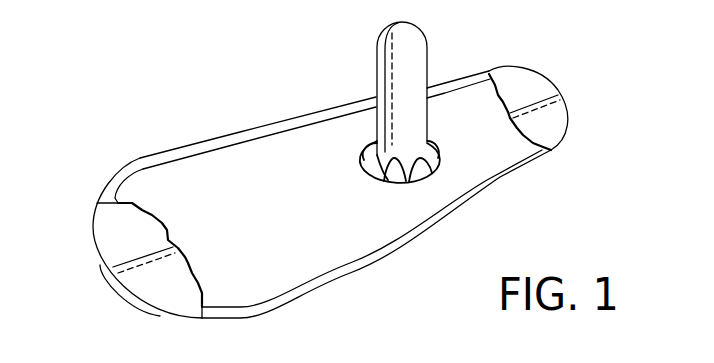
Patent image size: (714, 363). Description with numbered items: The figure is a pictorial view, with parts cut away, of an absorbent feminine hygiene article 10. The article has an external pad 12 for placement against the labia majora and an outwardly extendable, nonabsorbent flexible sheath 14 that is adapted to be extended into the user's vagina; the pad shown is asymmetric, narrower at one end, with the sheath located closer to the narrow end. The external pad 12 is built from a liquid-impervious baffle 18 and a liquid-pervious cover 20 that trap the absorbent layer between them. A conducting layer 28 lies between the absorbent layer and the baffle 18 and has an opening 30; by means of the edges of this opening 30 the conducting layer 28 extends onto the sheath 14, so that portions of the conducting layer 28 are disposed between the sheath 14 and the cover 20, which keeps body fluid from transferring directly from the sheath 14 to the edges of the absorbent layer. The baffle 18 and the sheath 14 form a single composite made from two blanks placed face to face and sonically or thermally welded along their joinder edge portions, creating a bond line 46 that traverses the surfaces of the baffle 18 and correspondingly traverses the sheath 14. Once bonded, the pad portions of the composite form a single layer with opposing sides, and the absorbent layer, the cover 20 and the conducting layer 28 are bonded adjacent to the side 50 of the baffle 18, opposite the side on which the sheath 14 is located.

The absorbent feminine hygiene article 10 is at (181, 101).
The external pad 12 is at (472, 198).
The sheath 14 is at (428, 51).
The liquid-impervious baffle 18 is at (165, 312).
The liquid-pervious cover 20 is at (500, 151).
The conducting layer 28 is at (402, 168).
The opening 30 is at (422, 136).
The bond line 46 is at (382, 80).
The side 50 is at (162, 279).